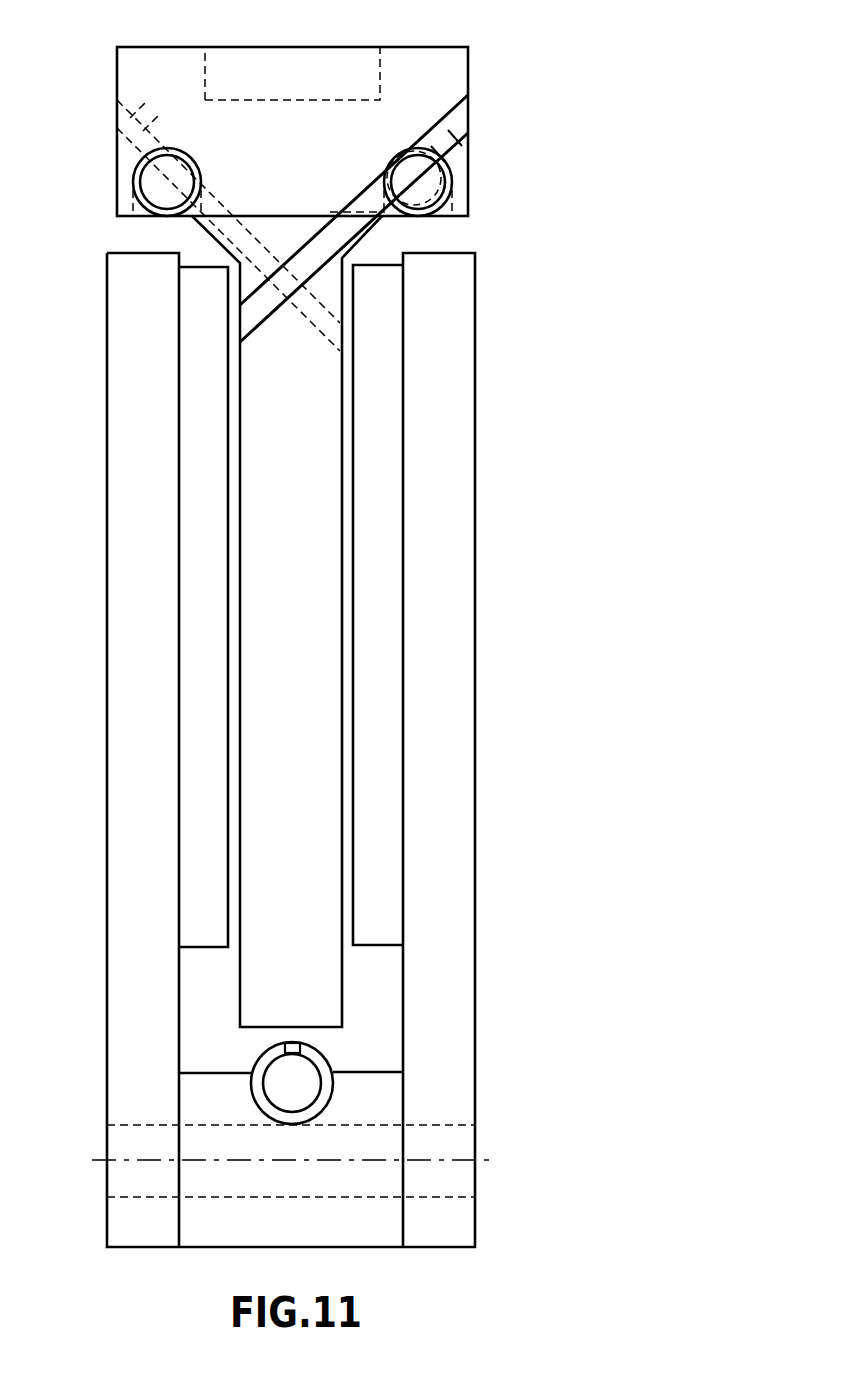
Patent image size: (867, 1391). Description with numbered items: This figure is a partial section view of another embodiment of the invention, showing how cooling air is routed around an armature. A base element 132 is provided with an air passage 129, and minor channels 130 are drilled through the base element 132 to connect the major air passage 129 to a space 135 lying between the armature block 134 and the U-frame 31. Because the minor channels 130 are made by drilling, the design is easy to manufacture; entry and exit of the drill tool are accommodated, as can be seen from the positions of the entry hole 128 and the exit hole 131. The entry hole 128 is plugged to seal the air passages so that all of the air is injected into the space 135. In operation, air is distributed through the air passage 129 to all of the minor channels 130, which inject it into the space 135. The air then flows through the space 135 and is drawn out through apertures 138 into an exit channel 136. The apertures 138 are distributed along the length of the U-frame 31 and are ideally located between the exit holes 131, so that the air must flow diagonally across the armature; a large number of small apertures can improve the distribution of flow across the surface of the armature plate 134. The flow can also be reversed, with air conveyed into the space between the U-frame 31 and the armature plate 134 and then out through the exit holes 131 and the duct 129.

The U-frame 31 is at (476, 833).
The entry hole 128 is at (470, 112).
The air passage 129 is at (452, 163).
The minor channels 130 is at (158, 135).
The exit hole 131 is at (240, 325).
The base element 132 is at (470, 68).
The armature block 134 is at (342, 393).
The space 135 is at (354, 670).
The exit channel 136 is at (333, 1065).
The apertures 138 is at (300, 1043).